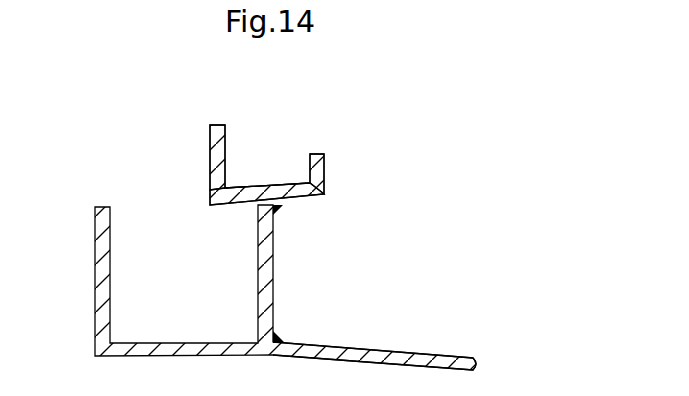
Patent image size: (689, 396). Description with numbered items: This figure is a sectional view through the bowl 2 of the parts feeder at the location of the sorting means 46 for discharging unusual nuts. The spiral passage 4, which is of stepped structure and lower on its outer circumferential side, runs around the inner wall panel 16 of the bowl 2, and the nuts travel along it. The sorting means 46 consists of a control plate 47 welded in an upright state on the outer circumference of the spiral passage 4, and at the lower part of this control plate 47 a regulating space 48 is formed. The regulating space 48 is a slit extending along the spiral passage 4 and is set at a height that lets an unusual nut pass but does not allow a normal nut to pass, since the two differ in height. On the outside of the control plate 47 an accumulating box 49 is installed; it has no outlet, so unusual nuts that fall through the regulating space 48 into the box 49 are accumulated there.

The bowl 2 is at (398, 304).
The spiral passage 4 is at (285, 185).
The inner wall panel 16 is at (325, 161).
The sorting means 46 is at (231, 132).
The control plate 47 is at (210, 133).
The regulating space 48 is at (222, 175).
The accumulating box 49 is at (203, 287).